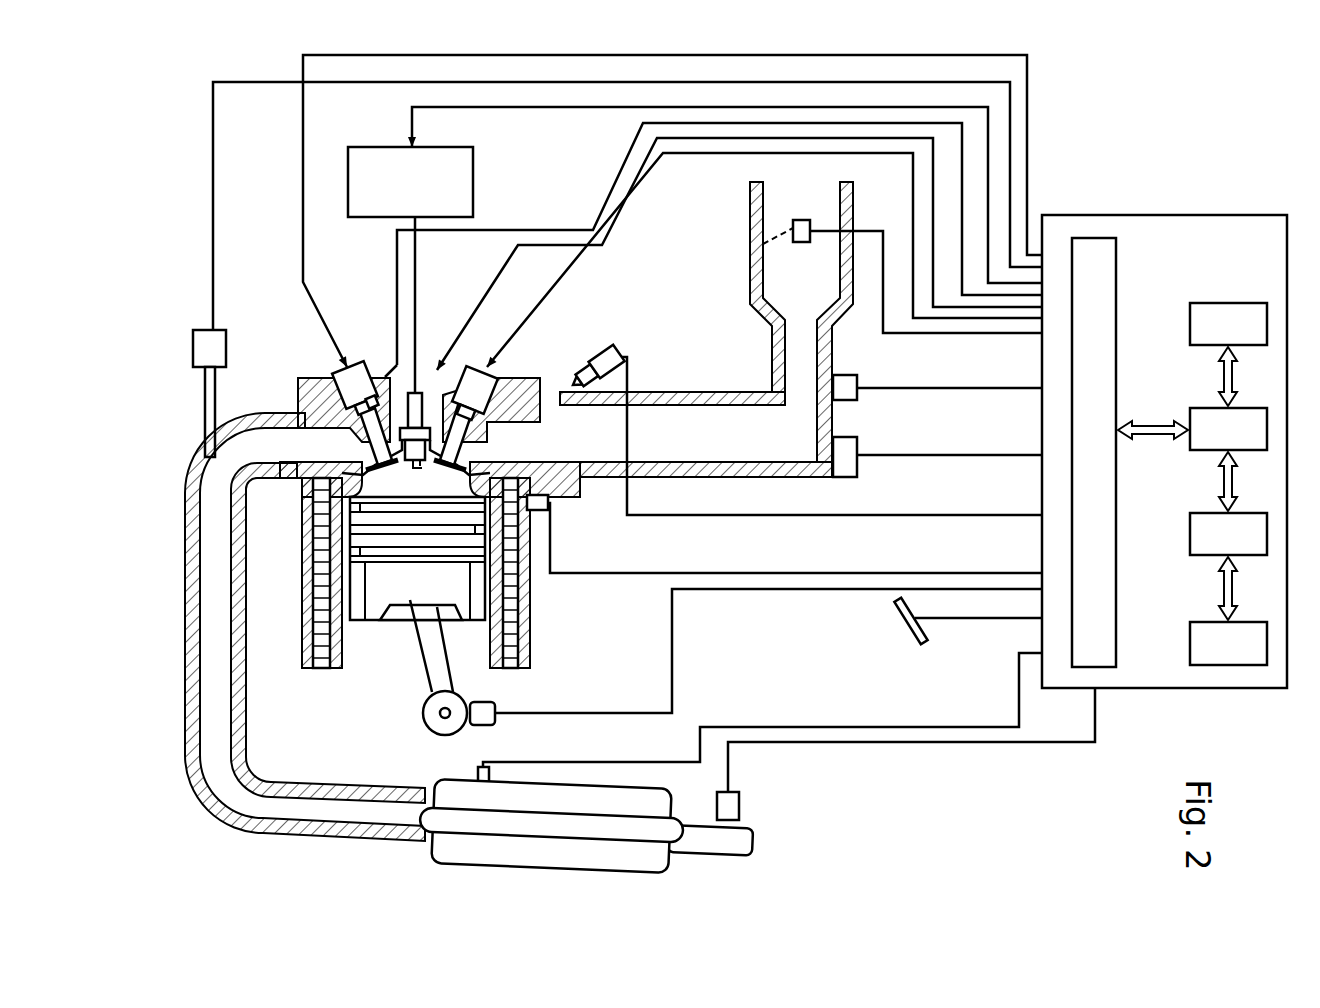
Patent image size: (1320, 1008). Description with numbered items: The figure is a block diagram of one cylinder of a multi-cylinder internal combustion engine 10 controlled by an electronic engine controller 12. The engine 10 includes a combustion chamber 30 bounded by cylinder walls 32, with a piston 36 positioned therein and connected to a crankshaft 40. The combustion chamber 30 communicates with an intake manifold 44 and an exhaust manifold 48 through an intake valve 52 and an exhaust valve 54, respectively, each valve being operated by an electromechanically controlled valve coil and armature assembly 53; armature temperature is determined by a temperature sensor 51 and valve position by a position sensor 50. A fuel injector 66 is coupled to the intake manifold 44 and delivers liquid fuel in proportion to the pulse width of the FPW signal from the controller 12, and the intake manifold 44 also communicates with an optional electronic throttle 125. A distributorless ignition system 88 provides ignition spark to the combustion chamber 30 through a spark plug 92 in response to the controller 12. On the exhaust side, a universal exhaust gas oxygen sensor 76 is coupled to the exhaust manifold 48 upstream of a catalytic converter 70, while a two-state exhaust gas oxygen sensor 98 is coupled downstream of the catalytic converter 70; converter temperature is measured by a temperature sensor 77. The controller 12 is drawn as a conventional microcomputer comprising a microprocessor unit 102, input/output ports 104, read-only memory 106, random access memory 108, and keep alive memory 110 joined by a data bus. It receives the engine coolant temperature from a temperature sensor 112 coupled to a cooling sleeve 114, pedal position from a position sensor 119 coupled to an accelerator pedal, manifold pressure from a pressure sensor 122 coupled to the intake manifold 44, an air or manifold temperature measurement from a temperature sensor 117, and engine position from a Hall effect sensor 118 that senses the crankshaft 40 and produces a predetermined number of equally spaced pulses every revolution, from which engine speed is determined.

The internal combustion engine 10 is at (296, 376).
The electronic engine controller 12 is at (1164, 418).
The combustion chamber 30 is at (413, 483).
The cylinder walls 32 is at (417, 594).
The piston 36 is at (410, 595).
The crankshaft 40 is at (423, 716).
The intake manifold 44 is at (760, 448).
The exhaust manifold 48 is at (212, 505).
The position sensor 50 is at (378, 360).
The temperature sensor 51 is at (440, 362).
The intake valve 52 is at (478, 445).
The electromechanically controlled valve coil and armature assembly 53 is at (345, 357).
The exhaust valve 54 is at (352, 455).
The fuel injector 66 is at (573, 362).
The catalytic converter 70 is at (508, 867).
The Universal Exhaust Gas Oxygen (UEGO) sensor 76 is at (193, 345).
The temperature sensor 77 is at (470, 778).
The distributorless ignition system 88 is at (473, 185).
The spark plug 92 is at (420, 372).
The two-state exhaust gas oxygen sensor 98 is at (750, 792).
The microprocessor unit 102 is at (1198, 408).
The input/output ports 104 is at (1118, 265).
The read-only memory 106 is at (1232, 303).
The random access memory 108 is at (1198, 513).
The keep alive memory 110 is at (1200, 622).
The temperature sensor 112 is at (552, 500).
The cooling sleeve 114 is at (338, 662).
The temperature sensor 117 is at (858, 380).
The Hall effect sensor 118 is at (490, 725).
The position sensor 119 is at (898, 635).
The pressure sensor 122 is at (860, 442).
The electronic throttle 125 is at (790, 212).